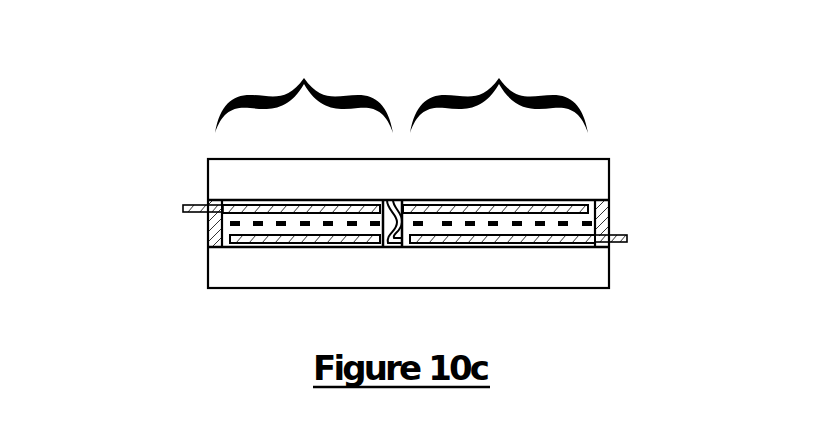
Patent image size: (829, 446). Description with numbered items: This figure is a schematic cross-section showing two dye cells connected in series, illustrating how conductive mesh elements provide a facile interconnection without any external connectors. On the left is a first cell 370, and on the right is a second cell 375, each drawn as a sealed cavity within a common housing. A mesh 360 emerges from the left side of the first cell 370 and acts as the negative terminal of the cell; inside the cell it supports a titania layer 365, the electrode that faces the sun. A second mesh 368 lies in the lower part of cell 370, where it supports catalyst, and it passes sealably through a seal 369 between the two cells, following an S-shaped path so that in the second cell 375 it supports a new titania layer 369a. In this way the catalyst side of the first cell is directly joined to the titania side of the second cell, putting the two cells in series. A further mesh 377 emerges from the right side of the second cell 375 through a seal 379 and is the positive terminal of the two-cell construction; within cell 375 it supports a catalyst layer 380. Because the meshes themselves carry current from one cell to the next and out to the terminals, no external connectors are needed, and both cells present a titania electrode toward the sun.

The mesh 360 is at (185, 207).
The titania layer 365 is at (257, 209).
The mesh 368 is at (265, 238).
The seal 369 is at (398, 240).
The titania layer 369a is at (440, 210).
The cell 370 is at (304, 73).
The second cell 375 is at (499, 73).
The mesh 377 is at (620, 236).
The seal 379 is at (602, 215).
The catalyst layer 380 is at (573, 239).